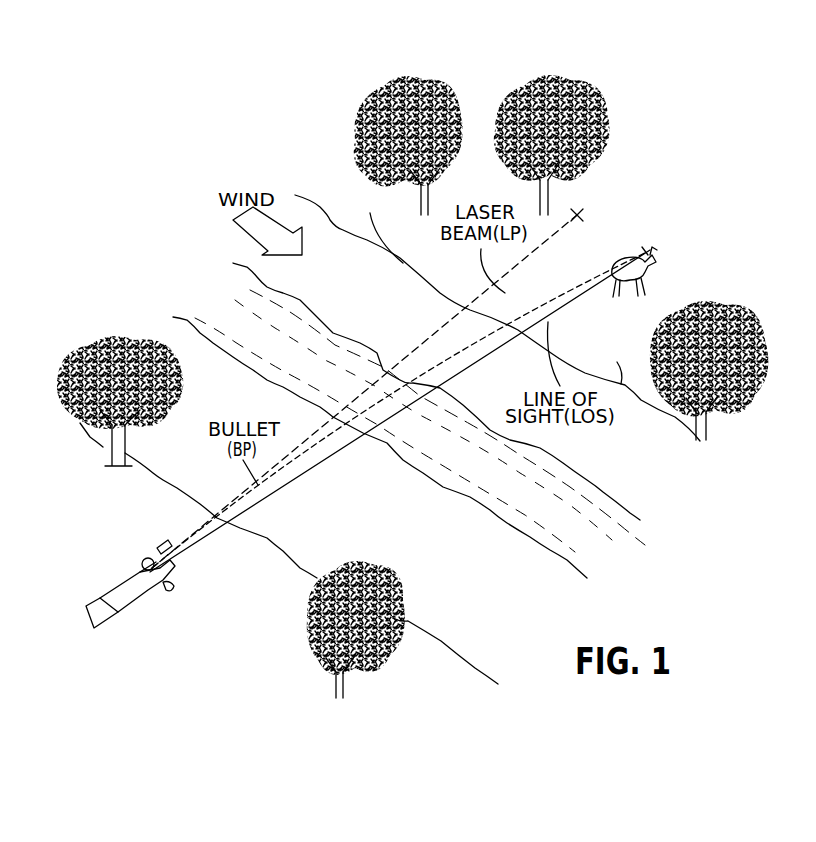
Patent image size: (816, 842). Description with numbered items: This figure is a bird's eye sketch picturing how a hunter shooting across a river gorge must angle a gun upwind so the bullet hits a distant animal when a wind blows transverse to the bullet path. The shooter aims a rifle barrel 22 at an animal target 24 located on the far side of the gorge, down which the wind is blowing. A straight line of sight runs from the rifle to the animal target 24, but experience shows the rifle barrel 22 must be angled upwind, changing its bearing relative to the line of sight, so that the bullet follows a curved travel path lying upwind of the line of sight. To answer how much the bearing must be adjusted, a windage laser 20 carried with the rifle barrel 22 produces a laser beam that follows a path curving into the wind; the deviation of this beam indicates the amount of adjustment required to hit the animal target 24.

The windage laser 20 is at (157, 543).
The rifle barrel 22 is at (177, 571).
The animal target 24 is at (642, 248).